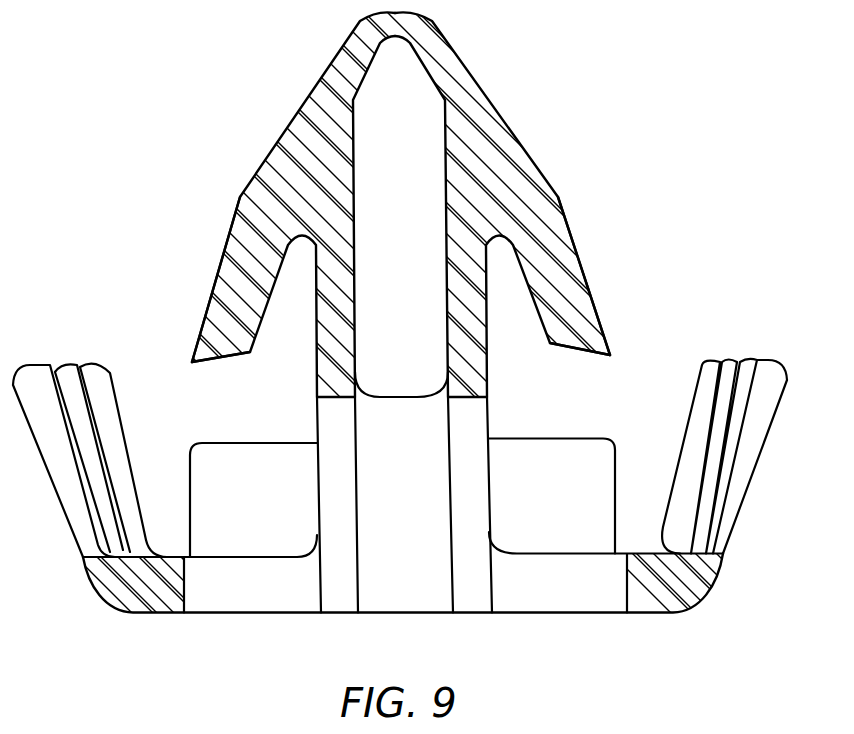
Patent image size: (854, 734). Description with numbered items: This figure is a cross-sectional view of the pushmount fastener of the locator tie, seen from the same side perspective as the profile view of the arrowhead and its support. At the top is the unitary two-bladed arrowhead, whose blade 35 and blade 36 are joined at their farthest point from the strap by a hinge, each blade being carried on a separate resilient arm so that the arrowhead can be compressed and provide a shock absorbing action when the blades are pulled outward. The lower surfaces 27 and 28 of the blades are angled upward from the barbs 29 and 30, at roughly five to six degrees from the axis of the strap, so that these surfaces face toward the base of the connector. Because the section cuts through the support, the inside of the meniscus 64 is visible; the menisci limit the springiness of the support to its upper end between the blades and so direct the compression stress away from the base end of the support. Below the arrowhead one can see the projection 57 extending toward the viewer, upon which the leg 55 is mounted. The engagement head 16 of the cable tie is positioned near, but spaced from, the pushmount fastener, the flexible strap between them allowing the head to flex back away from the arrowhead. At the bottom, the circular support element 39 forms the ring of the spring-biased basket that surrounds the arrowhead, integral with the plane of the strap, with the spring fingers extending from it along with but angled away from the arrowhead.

The blade 36 is at (300, 113).
The blade 35 is at (480, 105).
The barb 30 is at (190, 360).
The lower surface 28 is at (222, 361).
The barb 29 is at (612, 355).
The lower surface 27 is at (583, 354).
The meniscus 64 is at (410, 447).
The leg 55 is at (332, 452).
The engagement head 16 is at (573, 470).
The projection 57 is at (430, 588).
The circular support element 39 is at (142, 587).